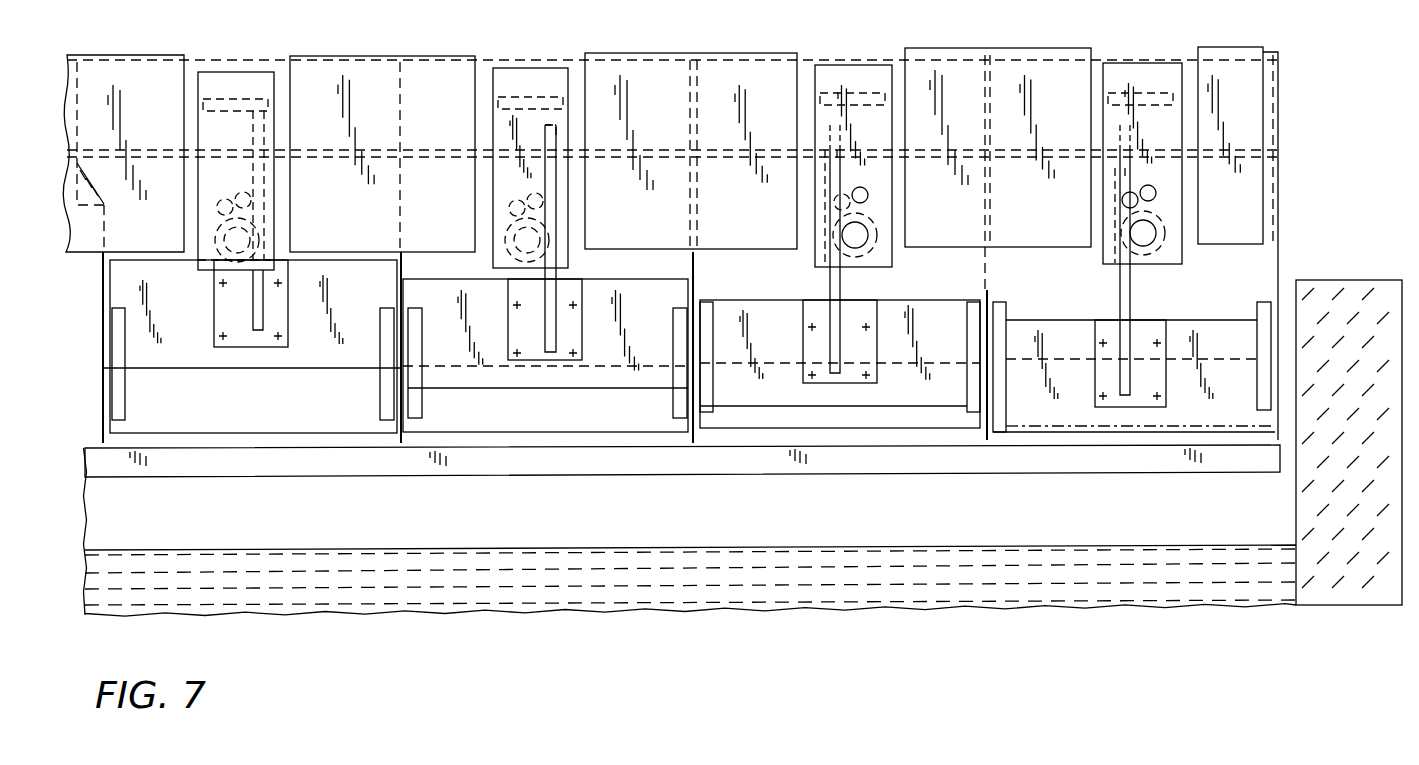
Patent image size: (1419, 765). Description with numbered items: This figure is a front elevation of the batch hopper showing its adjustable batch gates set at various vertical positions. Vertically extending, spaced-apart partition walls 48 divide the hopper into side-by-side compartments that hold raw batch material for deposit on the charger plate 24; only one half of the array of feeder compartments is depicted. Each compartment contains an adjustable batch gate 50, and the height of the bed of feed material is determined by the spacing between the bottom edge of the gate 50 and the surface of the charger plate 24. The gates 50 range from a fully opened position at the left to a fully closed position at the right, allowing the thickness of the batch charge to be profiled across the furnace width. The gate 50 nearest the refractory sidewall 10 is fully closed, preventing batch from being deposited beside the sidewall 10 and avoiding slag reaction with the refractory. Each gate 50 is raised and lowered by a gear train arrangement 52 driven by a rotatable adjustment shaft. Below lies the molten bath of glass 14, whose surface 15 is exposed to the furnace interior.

The sidewall 10 is at (1308, 510).
The molten bath of glass 14 is at (913, 594).
The surface 15 is at (533, 549).
The charger plate 24 is at (863, 463).
The partition walls 48 is at (400, 225).
The adjustable batch gate 50 is at (223, 368).
The gear train arrangement 52 is at (268, 222).